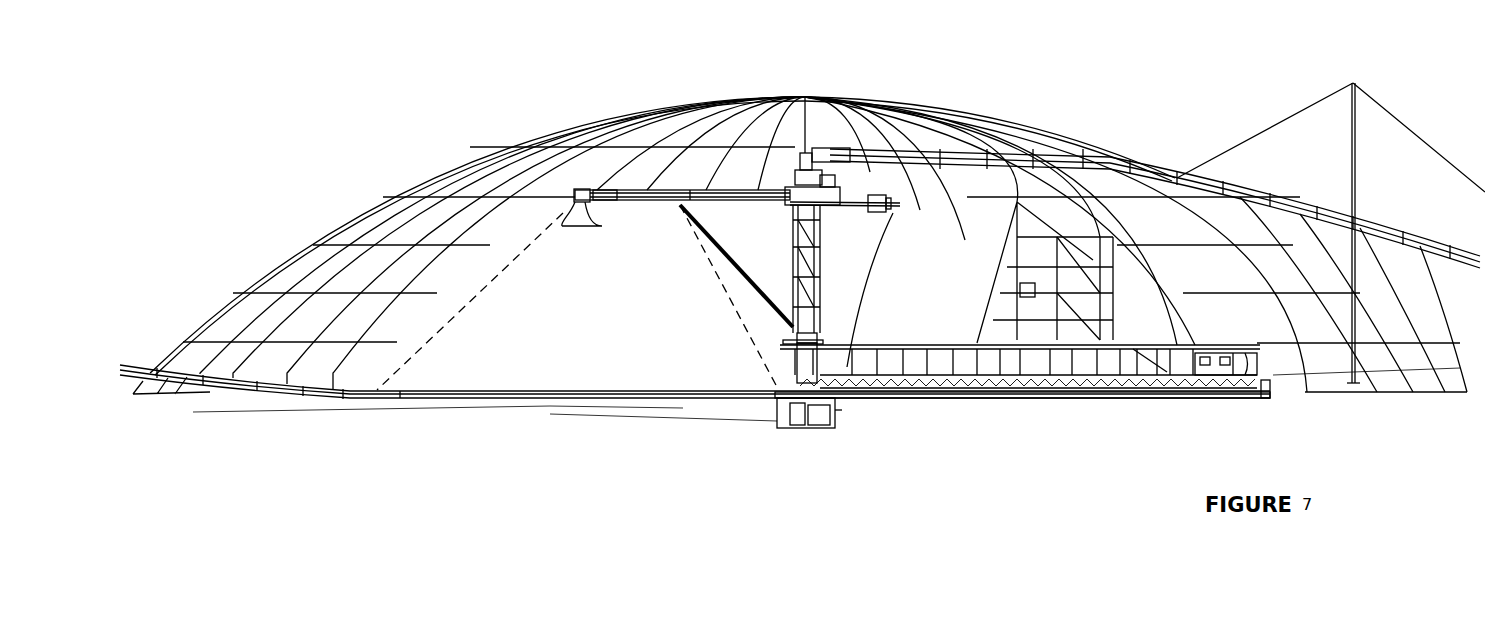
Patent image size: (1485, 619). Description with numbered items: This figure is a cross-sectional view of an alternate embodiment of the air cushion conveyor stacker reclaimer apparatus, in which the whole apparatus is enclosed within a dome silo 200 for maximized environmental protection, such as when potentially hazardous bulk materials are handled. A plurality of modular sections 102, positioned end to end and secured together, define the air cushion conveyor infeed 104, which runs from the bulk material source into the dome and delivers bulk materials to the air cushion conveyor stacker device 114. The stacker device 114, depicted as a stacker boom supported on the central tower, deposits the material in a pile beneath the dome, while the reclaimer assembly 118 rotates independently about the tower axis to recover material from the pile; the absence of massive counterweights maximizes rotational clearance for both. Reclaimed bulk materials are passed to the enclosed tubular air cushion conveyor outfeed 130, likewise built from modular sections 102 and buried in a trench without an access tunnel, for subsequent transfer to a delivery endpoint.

The dome silo 200 is at (630, 117).
The modular sections 102 is at (1297, 203).
The air cushion conveyor infeed 104 is at (1225, 190).
The air cushion conveyor stacker device 114 is at (657, 203).
The reclaimer assembly 118 is at (1050, 392).
The air cushion conveyor outfeed 130 is at (202, 387).